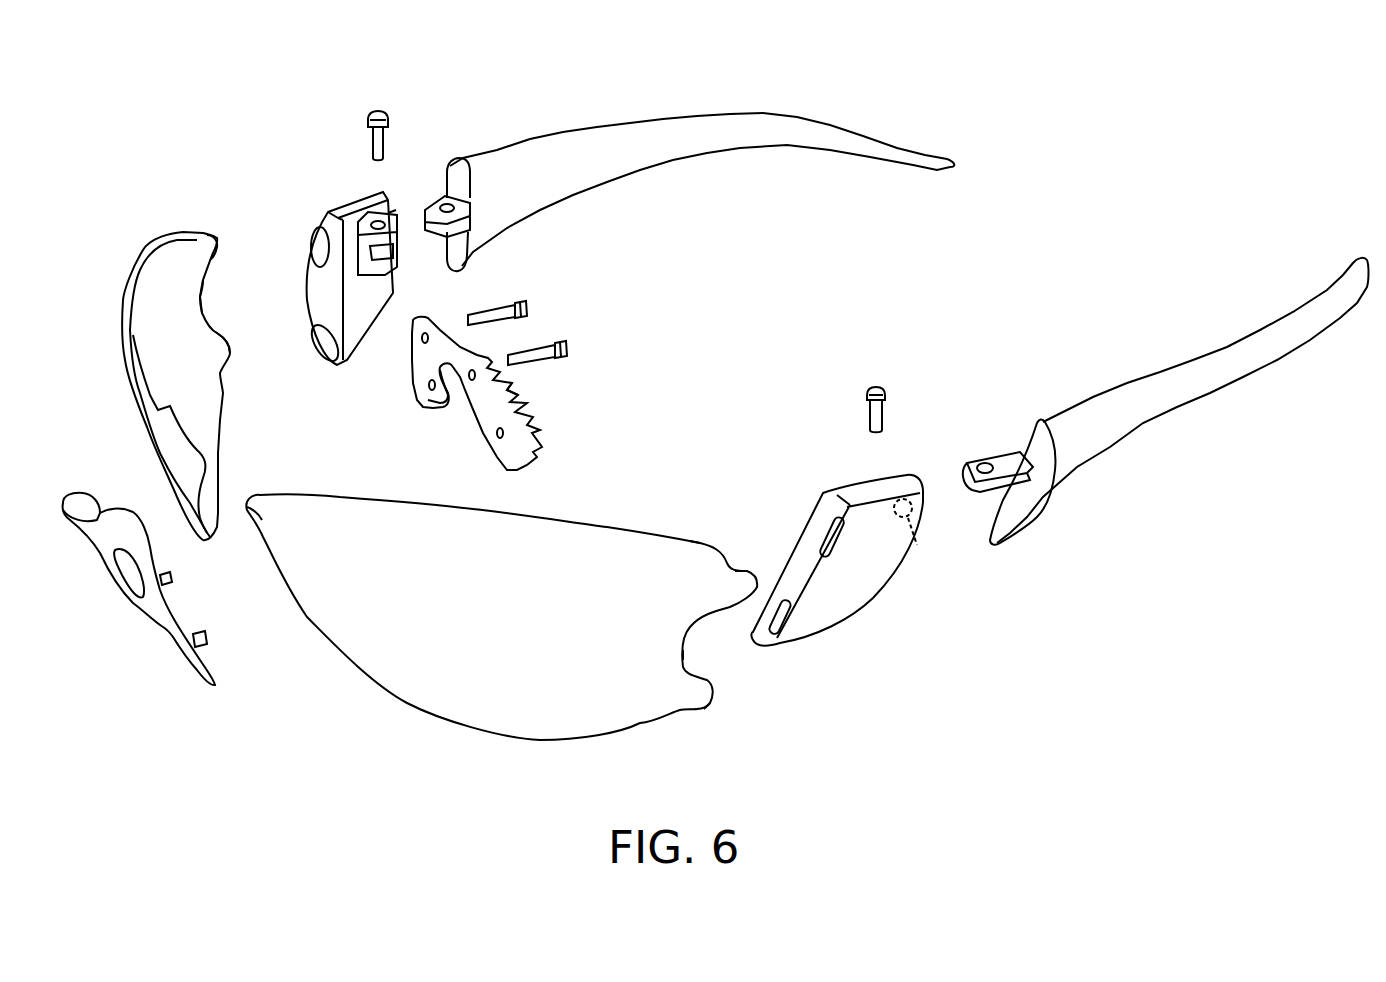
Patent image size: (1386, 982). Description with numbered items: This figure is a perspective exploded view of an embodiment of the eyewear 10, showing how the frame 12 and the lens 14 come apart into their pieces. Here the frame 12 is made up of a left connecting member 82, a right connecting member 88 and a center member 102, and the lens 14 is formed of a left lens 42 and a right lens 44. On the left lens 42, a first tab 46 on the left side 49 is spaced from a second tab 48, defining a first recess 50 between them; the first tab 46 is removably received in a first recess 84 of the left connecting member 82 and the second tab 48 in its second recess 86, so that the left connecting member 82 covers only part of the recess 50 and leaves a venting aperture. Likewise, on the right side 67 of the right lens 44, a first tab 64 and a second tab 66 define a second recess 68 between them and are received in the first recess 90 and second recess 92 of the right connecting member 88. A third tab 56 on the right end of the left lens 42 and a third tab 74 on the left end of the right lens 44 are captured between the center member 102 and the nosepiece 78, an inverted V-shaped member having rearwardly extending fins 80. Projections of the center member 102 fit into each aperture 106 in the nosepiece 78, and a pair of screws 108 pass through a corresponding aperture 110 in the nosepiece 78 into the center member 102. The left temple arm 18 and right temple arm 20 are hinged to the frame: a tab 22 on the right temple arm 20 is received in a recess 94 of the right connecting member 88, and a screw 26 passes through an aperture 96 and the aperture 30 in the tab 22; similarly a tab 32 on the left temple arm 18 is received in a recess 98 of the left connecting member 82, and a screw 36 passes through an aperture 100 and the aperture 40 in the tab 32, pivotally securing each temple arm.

The eyewear 10 is at (1142, 210).
The frame 12 is at (75, 490).
The lens 14 is at (504, 619).
The left temple arm 18 is at (1193, 397).
The right temple arm 20 is at (760, 125).
The tab 22 is at (463, 224).
The screw 26 is at (377, 108).
The aperture 30 is at (458, 196).
The tab 32 is at (1013, 450).
The screw 36 is at (873, 385).
The aperture 40 is at (983, 460).
The left lens 42 is at (504, 623).
The right lens 44 is at (160, 276).
The first tab 46 is at (745, 572).
The second tab 48 is at (705, 703).
The left side 49 is at (697, 550).
The first recess 50 is at (695, 653).
The third tab 56 is at (260, 510).
The first tab 64 is at (217, 238).
The second tab 66 is at (222, 358).
The right side 67 is at (180, 232).
The second recess 68 is at (205, 305).
The third tab 74 is at (183, 465).
The nosepiece 78 is at (520, 460).
The fins 80 is at (525, 405).
The left connecting member 82 is at (855, 600).
The first recess 84 is at (825, 530).
The second recess 86 is at (777, 640).
The right connecting member 88 is at (334, 208).
The first recess 90 is at (312, 240).
The second recess 92 is at (314, 352).
The recess 94 is at (397, 262).
The aperture 96 is at (390, 210).
The recess 98 is at (918, 510).
The aperture 100 is at (913, 532).
The center member 102 is at (100, 567).
The aperture 106 is at (430, 390).
The screws 108 is at (533, 343).
The aperture 110 is at (428, 335).